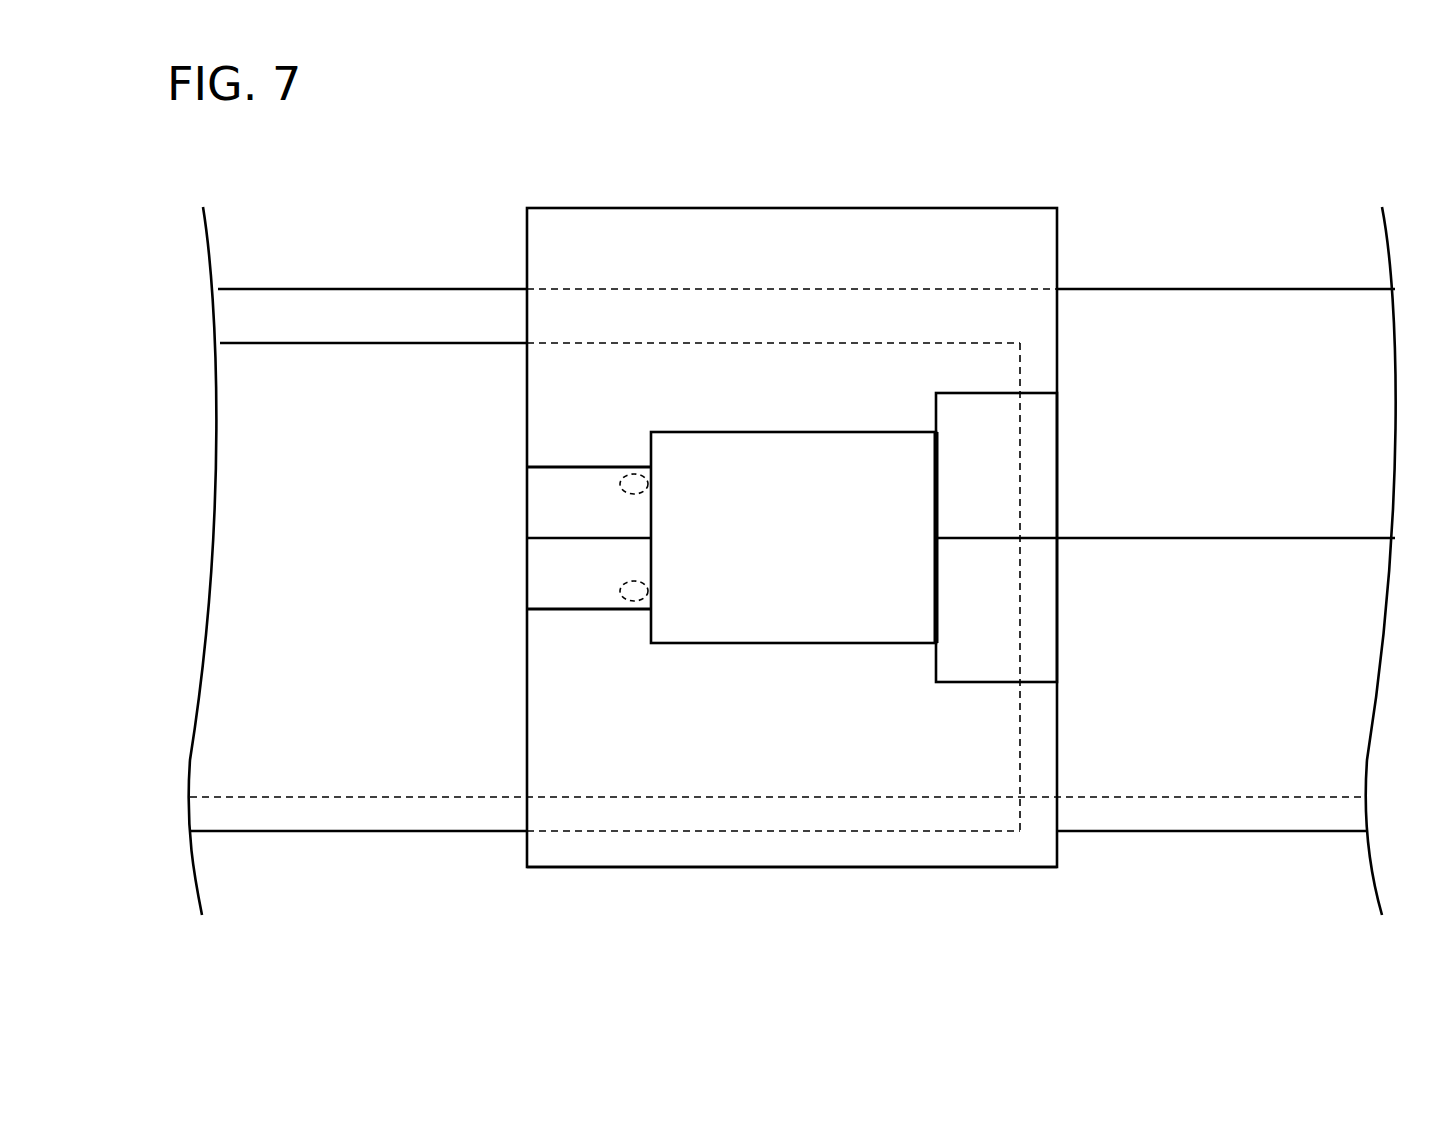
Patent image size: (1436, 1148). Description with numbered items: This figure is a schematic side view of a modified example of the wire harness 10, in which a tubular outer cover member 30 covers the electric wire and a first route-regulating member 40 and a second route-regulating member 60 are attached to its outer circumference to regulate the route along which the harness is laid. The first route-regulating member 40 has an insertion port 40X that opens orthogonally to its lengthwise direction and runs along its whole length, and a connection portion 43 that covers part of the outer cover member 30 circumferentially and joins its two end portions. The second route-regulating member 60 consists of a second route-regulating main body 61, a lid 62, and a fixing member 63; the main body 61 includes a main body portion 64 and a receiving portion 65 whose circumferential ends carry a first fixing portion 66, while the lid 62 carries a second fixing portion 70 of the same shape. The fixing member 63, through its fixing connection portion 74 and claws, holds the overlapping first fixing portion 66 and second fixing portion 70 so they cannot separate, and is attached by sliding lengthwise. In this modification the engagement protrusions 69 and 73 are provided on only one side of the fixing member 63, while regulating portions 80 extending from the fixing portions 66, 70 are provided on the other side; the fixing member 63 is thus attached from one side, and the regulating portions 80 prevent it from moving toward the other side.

The wire harness 10 is at (1066, 168).
The outer cover member 30 is at (279, 289).
The first route-regulating member 40 is at (290, 834).
The insertion port 40X is at (364, 344).
The connection portion 43 is at (408, 778).
The second route-regulating member 60 is at (1263, 835).
The second route-regulating main body 61 is at (1178, 834).
The lid 62 is at (793, 208).
The fixing member 63 is at (790, 445).
The main body portion 64 is at (1110, 834).
The receiving portion 65 is at (792, 867).
The first fixing portion 66 is at (575, 593).
The engagement protrusion 69 is at (636, 601).
The second fixing portion 70 is at (573, 485).
The engagement protrusion 73 is at (634, 474).
The fixing connection portion 74 is at (795, 552).
The regulating portion 80 is at (974, 405).